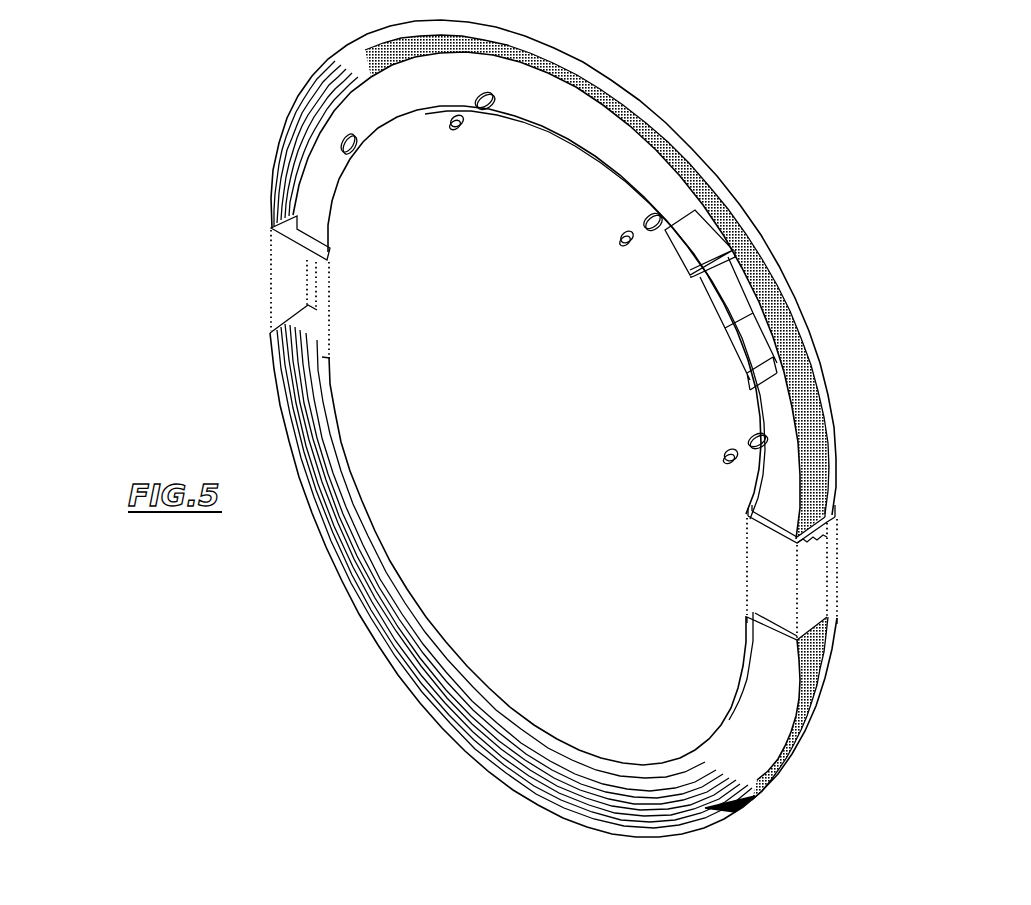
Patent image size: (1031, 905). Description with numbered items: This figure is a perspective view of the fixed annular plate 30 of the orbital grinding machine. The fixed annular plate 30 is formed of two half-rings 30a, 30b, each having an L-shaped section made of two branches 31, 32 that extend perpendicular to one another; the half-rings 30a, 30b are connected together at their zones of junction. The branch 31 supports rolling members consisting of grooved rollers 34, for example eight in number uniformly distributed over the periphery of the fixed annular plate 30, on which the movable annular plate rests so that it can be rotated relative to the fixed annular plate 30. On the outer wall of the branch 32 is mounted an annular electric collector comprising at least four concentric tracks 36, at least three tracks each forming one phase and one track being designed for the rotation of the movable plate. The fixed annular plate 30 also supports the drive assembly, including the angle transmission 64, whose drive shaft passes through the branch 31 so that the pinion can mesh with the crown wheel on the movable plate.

The fixed annular plate 30 is at (889, 501).
The half-ring 30a is at (654, 101).
The half-ring 30b is at (449, 627).
The branch 31 is at (540, 141).
The branch 32 is at (779, 297).
The grooved rollers 34 is at (462, 126).
The concentric tracks 36 is at (289, 205).
The angle transmission 64 is at (707, 228).